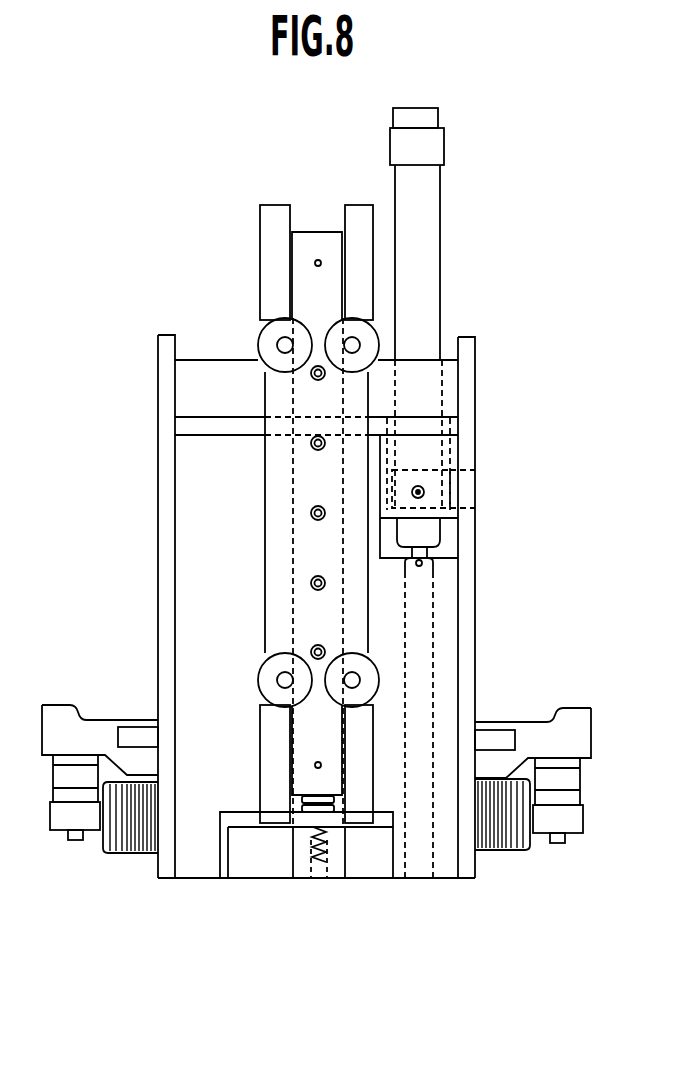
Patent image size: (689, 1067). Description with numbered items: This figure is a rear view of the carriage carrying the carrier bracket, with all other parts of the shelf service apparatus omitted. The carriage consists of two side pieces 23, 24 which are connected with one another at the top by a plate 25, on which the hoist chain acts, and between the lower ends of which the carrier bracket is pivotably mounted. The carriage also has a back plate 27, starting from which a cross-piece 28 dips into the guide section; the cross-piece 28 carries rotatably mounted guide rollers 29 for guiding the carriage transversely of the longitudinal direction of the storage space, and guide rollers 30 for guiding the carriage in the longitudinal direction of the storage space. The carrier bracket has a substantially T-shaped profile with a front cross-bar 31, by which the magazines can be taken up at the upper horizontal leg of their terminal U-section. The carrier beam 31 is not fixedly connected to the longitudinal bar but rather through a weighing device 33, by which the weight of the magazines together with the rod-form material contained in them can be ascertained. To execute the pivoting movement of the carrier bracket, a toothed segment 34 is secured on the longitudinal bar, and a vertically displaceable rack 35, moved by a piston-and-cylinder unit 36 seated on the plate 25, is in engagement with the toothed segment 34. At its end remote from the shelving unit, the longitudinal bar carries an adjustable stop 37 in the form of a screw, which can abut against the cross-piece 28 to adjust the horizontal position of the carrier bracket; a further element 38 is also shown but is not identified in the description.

The side piece 23 is at (165, 567).
The side piece 24 is at (468, 586).
The plate 25 is at (220, 428).
The back plate 27 is at (216, 782).
The cross-piece 28 is at (308, 483).
The guide rollers 29 is at (278, 210).
The guide rollers 30 is at (363, 333).
The front cross-bar 31 is at (97, 735).
The weighing device 33 is at (130, 855).
The toothed segment 34 is at (422, 663).
The rack 35 is at (422, 858).
The piston-and-cylinder unit 36 is at (420, 118).
The adjustable stop 37 is at (310, 853).
The clamping block 38 is at (62, 705).